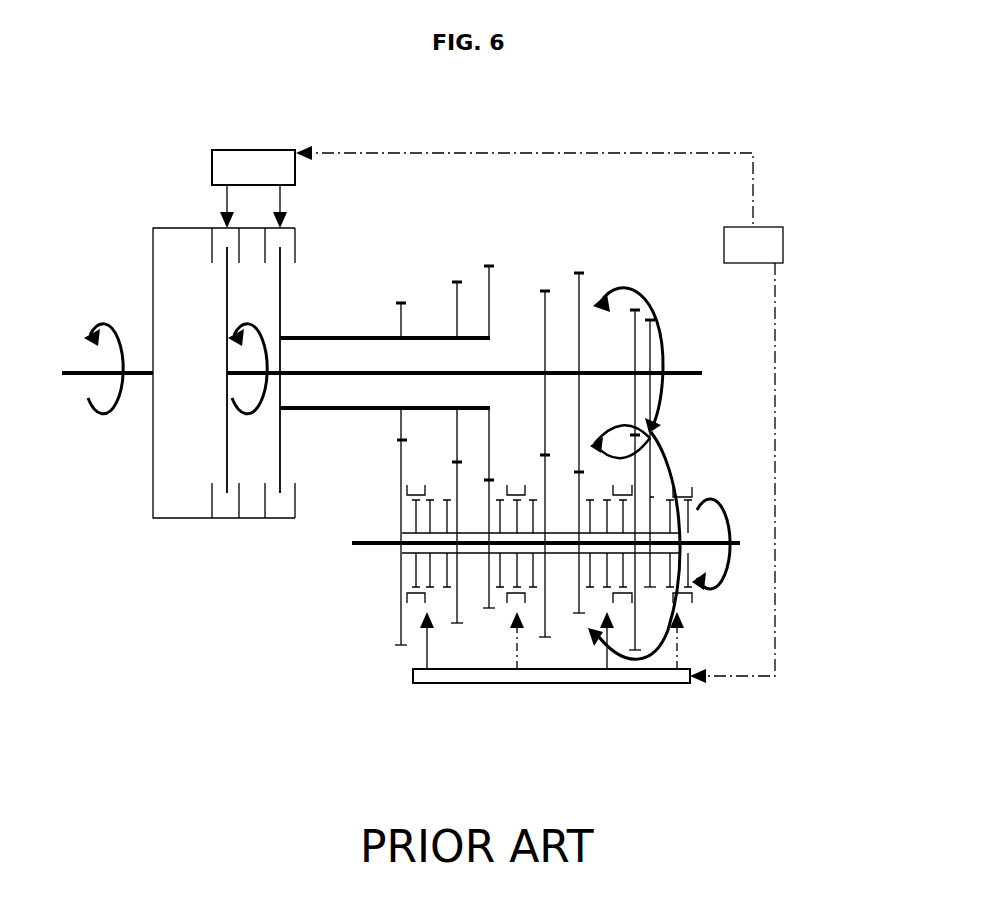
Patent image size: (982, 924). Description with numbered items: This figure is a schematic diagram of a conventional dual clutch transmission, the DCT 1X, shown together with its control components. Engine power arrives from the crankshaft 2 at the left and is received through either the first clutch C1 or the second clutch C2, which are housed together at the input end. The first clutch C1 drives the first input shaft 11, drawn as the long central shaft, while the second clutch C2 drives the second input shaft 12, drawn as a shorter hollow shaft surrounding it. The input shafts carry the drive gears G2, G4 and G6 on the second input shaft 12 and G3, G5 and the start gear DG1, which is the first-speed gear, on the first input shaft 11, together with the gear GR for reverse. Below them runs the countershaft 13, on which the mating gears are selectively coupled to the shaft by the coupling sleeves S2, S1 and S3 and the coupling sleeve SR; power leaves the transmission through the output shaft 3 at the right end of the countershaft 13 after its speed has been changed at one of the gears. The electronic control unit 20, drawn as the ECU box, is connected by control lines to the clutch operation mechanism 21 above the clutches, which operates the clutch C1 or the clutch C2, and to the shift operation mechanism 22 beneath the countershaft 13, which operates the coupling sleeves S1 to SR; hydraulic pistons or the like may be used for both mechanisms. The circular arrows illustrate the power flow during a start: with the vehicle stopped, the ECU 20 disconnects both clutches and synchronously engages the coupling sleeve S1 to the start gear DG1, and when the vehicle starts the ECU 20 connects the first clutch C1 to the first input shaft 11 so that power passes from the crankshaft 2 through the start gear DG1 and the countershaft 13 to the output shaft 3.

The crankshaft 2 is at (78, 372).
The first clutch C1 is at (222, 274).
The second clutch C2 is at (277, 292).
The clutch operation mechanism 21 is at (212, 172).
The second input shaft 12 is at (318, 336).
The first input shaft 11 is at (677, 370).
The gear G2 is at (401, 300).
The gear G4 is at (456, 280).
The gear G6 is at (489, 264).
The gear G3 is at (545, 289).
The gear G5 is at (579, 271).
The start gear DG1 is at (635, 307).
The gear GR is at (650, 318).
The electronic control unit 20 is at (783, 232).
The DCT 1X is at (785, 292).
The countershaft 13 is at (352, 543).
The output shaft 3 is at (740, 540).
The coupling sleeve S2 is at (433, 577).
The coupling sleeve S1 is at (520, 578).
The coupling sleeve S3 is at (612, 572).
The coupling sleeve SR is at (688, 590).
The shift operation mechanism 22 is at (413, 672).